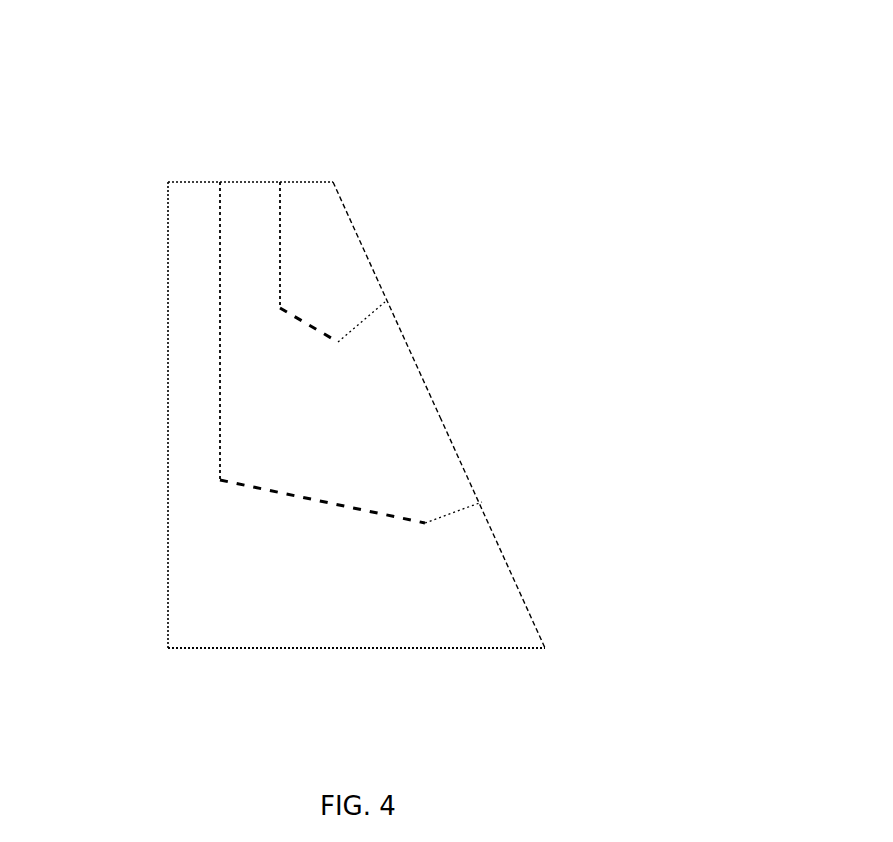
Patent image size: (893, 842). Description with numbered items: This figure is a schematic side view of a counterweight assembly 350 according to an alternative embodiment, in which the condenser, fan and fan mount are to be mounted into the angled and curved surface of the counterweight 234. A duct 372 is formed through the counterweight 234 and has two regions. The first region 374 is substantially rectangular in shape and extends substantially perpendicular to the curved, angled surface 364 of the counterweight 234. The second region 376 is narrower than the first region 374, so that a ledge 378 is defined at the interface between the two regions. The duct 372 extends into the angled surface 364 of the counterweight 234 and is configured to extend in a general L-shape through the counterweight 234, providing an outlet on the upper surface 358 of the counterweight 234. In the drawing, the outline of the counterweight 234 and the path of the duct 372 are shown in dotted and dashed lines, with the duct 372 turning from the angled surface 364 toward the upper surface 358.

The counterweight assembly 350 is at (622, 333).
The counterweight 234 is at (190, 433).
The angled surface 364 is at (355, 224).
The first region 374 is at (405, 375).
The duct 372 is at (197, 273).
The second region 376 is at (253, 207).
The upper surface 358 is at (312, 180).
The ledge 378 is at (423, 527).